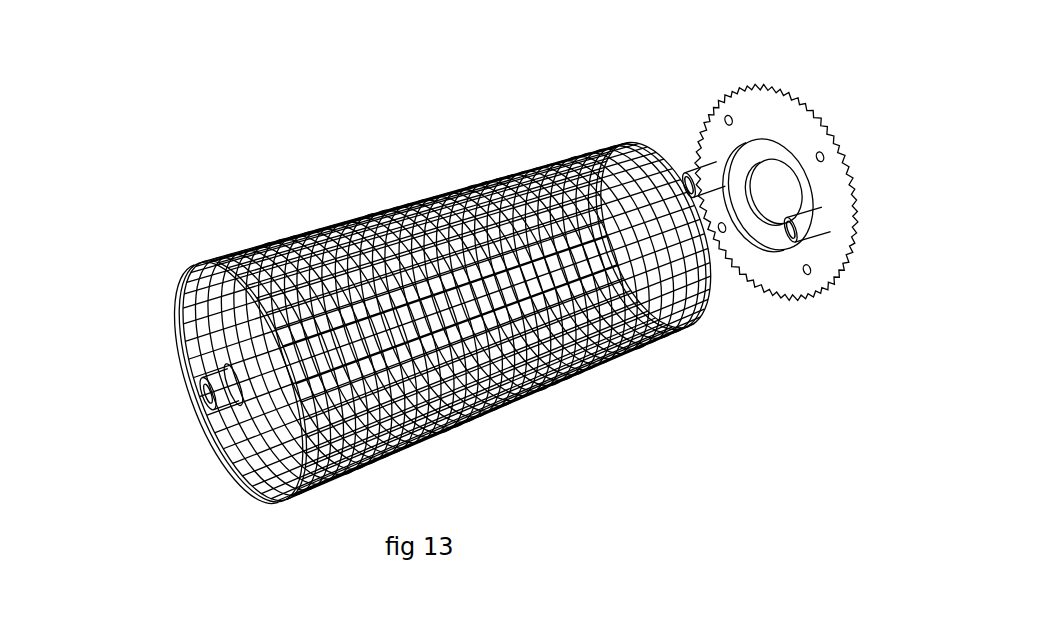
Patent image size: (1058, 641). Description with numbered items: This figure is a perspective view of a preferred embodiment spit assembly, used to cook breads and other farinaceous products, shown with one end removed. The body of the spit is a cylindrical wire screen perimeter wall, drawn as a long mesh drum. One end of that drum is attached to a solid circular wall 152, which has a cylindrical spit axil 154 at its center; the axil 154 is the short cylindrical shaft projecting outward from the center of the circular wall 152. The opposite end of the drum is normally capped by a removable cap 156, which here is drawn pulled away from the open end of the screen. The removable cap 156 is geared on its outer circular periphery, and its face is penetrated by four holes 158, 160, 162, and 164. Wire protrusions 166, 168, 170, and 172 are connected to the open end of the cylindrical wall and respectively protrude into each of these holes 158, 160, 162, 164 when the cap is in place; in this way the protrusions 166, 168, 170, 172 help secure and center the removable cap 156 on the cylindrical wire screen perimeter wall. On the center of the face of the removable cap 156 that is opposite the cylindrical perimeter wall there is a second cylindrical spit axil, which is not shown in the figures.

The solid circular wall 152 is at (253, 442).
The cylindrical spit axil 154 is at (227, 393).
The removable cap 156 is at (822, 248).
The hole 158 is at (823, 150).
The hole 160 is at (808, 276).
The hole 162 is at (725, 234).
The hole 164 is at (731, 115).
The wire protrusion 166 is at (689, 165).
The wire protrusion 168 is at (691, 322).
The wire protrusion 170 is at (602, 367).
The wire protrusion 172 is at (606, 146).